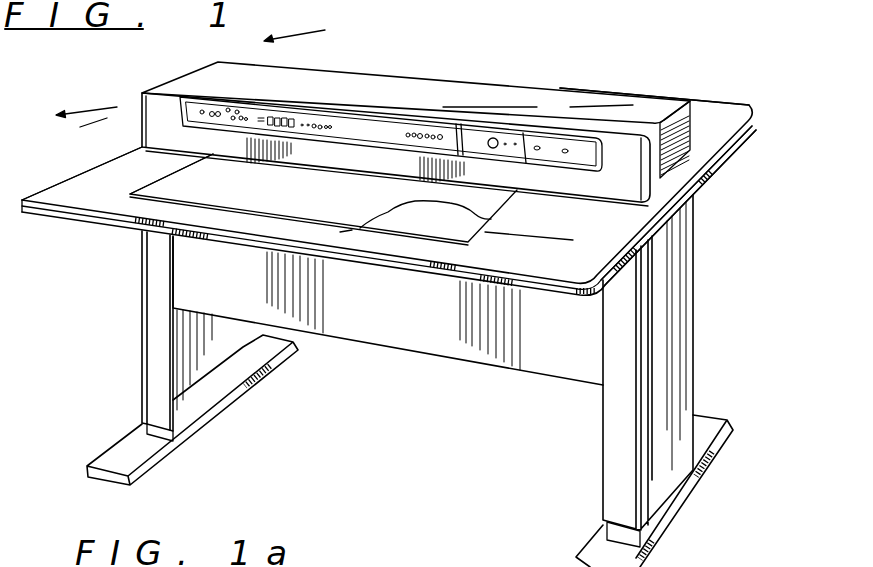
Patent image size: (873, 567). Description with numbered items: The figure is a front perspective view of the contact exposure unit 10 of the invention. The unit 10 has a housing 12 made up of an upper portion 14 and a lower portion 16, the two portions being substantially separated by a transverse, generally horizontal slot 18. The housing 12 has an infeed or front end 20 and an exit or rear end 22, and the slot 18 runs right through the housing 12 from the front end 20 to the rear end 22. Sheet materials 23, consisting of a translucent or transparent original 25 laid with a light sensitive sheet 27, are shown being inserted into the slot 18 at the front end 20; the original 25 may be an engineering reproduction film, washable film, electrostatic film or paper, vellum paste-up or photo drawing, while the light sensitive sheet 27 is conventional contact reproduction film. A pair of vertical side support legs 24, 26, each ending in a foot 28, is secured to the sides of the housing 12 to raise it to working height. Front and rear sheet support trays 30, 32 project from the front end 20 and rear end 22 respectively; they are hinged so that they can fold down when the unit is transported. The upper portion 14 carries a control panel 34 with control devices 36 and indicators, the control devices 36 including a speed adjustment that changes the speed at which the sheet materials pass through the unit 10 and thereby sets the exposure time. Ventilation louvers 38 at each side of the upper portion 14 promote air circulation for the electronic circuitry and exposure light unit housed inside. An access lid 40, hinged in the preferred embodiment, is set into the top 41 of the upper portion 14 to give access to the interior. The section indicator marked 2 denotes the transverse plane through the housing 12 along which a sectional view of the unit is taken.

The section line 2- 2 is at (196, 81).
The contact exposure unit 10 is at (168, 68).
The housing 12 is at (297, 58).
The upper portion 14 is at (643, 201).
The lower portion 16 is at (560, 353).
The slot 18 is at (553, 193).
The front end 20 is at (143, 138).
The rear end 22 is at (697, 140).
The sheet materials 23 is at (150, 171).
The side support leg 24 is at (660, 480).
The original 25 is at (243, 197).
The side support leg 26 is at (207, 386).
The light sensitive sheet 27 is at (407, 224).
The foot 28 is at (140, 449).
The front sheet support tray 30 is at (537, 252).
The rear sheet support tray 32 is at (707, 107).
The control panel 34 is at (370, 132).
The control devices 36 is at (490, 148).
The ventilation louvers 38 is at (676, 157).
The access lid 40 is at (320, 99).
The top 41 is at (437, 95).